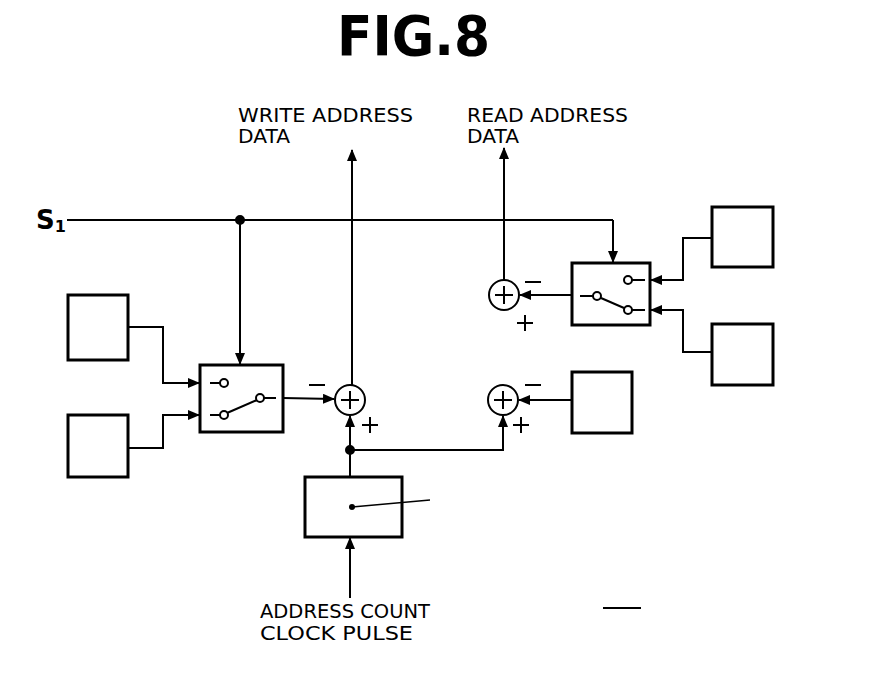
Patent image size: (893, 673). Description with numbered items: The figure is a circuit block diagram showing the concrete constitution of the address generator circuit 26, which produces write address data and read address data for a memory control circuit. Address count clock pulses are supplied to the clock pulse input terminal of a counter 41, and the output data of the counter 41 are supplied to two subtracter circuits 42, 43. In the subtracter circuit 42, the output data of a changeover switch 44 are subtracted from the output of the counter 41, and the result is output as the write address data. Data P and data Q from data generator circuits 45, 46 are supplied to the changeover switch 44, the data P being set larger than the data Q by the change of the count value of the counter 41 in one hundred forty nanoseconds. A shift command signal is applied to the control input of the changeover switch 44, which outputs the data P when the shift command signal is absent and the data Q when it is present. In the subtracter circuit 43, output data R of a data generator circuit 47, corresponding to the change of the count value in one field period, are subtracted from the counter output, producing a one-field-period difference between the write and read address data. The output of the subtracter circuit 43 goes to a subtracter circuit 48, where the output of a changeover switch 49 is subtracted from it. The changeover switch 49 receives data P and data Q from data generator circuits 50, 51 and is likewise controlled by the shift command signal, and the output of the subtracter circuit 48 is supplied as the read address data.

The address generator circuit 26 is at (622, 592).
The counter 41 is at (390, 538).
The subtracter circuit 42 is at (361, 389).
The subtracter circuit 43 is at (488, 404).
The changeover switch 44 is at (220, 433).
The data generator circuit 45 is at (108, 478).
The data generator circuit 46 is at (112, 295).
The data generator circuit 47 is at (622, 434).
The subtracter circuit 48 is at (490, 288).
The changeover switch 49 is at (640, 262).
The data generator circuit 50 is at (773, 345).
The data generator circuit 51 is at (773, 225).